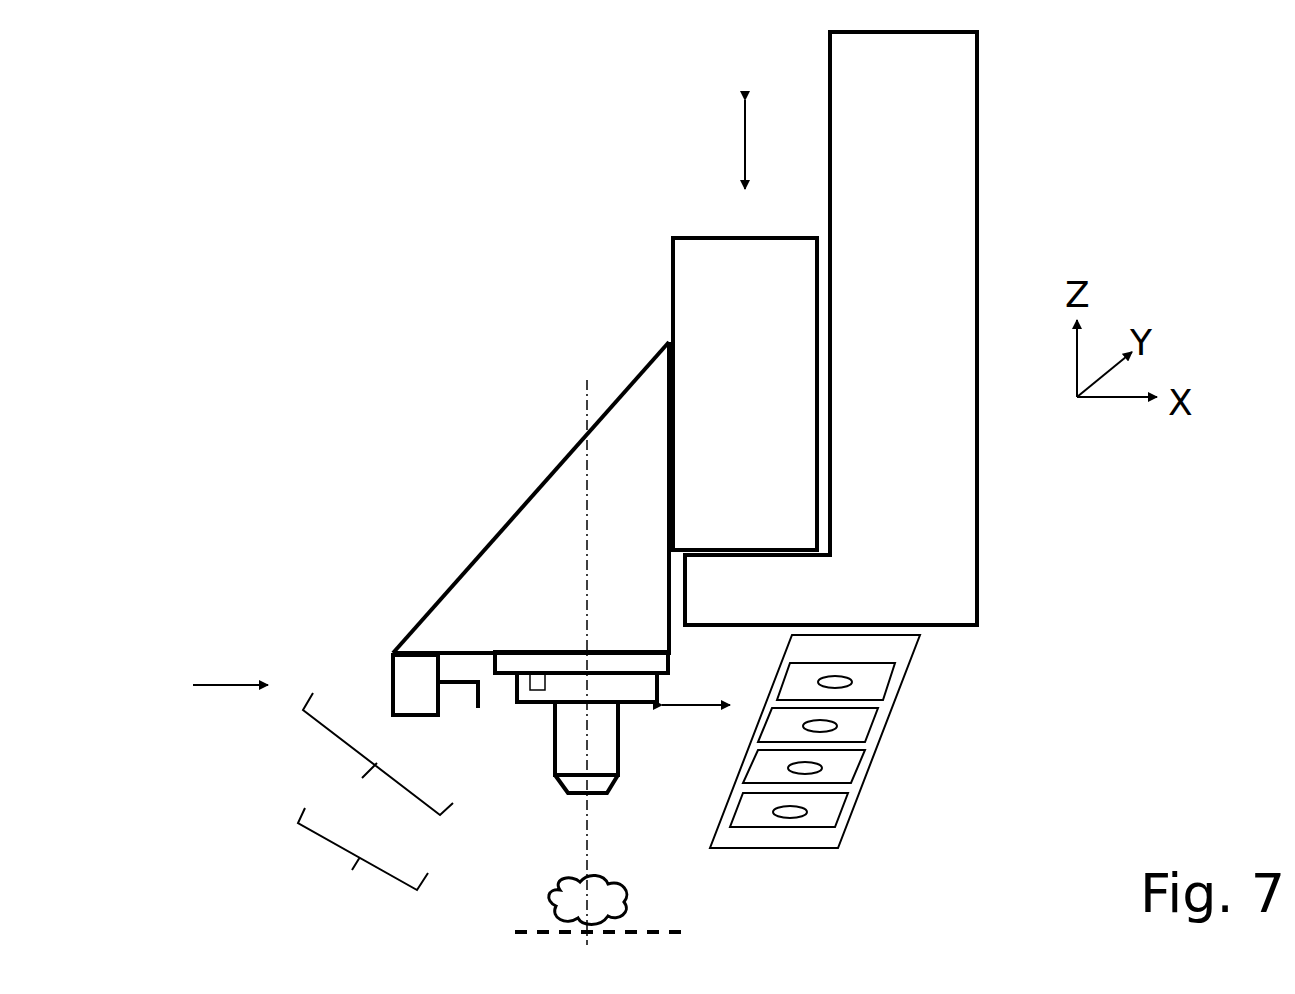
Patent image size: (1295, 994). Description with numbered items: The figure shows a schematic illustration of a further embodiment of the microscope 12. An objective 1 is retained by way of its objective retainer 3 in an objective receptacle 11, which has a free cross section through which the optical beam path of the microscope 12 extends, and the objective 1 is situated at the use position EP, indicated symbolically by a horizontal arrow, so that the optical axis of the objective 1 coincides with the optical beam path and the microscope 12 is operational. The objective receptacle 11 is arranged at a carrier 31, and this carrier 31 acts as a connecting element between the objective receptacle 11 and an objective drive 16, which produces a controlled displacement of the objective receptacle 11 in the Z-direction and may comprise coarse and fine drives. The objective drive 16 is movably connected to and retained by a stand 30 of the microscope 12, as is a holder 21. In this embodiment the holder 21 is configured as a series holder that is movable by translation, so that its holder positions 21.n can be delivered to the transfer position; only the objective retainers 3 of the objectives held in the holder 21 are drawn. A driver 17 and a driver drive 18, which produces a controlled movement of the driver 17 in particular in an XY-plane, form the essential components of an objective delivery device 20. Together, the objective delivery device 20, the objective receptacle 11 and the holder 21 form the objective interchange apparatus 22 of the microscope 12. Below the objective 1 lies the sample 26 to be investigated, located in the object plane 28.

The objective 1 is at (602, 760).
The objective retainer 3 is at (553, 697).
The objective receptacle 11 is at (503, 678).
The microscope 12 is at (521, 198).
The objective drive 16 is at (773, 334).
The driver 17 is at (462, 690).
The driver drive 18 is at (407, 695).
The objective delivery device 20 is at (378, 758).
The holder 21 is at (917, 652).
The holder positions 21.n is at (877, 727).
The objective interchange apparatus 22 is at (363, 866).
The sample 26 is at (603, 902).
The object plane 28 is at (525, 925).
The stand 30 is at (936, 161).
The carrier / connecting element 31 is at (545, 622).
The use position EP is at (222, 685).